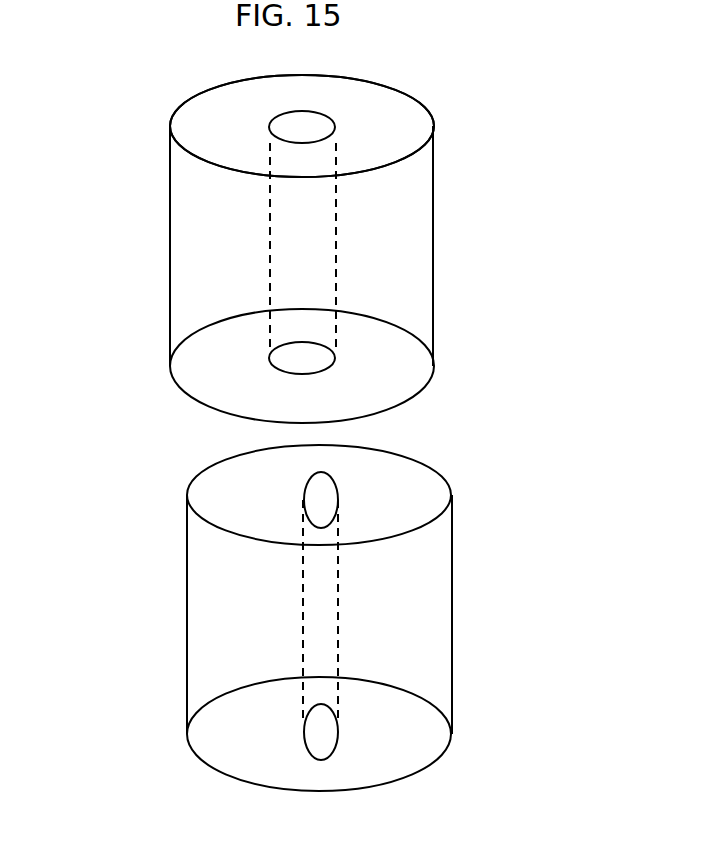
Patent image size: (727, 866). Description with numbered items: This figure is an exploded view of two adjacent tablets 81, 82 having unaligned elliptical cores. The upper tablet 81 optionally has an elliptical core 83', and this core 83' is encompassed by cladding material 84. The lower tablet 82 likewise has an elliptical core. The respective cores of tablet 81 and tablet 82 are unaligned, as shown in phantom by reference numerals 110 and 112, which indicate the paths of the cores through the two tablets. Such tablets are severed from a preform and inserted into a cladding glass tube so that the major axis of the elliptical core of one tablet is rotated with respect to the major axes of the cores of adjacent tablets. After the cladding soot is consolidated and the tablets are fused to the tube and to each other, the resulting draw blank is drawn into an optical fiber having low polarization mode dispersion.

The tablet 81 is at (435, 248).
The tablet 82 is at (462, 585).
The elliptical core 83' is at (386, 109).
The cladding material 84 is at (368, 125).
The core of tablet 81 shown in phantom 110 is at (303, 237).
The core of tablet 82 shown in phantom 112 is at (320, 611).